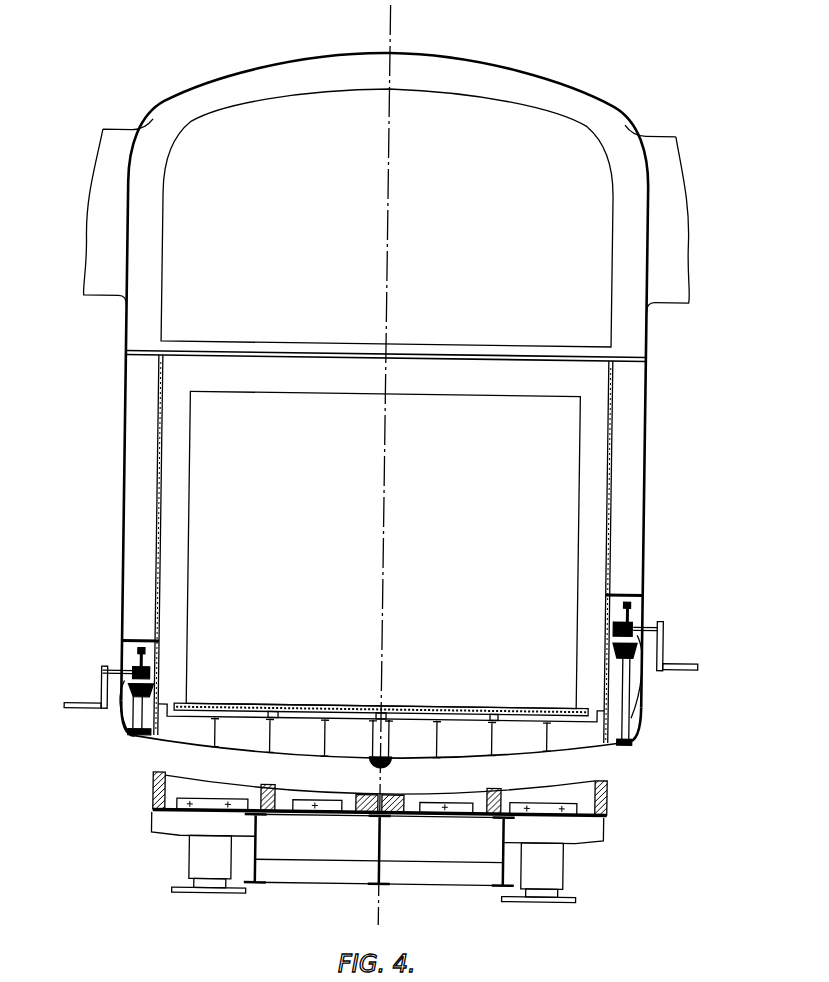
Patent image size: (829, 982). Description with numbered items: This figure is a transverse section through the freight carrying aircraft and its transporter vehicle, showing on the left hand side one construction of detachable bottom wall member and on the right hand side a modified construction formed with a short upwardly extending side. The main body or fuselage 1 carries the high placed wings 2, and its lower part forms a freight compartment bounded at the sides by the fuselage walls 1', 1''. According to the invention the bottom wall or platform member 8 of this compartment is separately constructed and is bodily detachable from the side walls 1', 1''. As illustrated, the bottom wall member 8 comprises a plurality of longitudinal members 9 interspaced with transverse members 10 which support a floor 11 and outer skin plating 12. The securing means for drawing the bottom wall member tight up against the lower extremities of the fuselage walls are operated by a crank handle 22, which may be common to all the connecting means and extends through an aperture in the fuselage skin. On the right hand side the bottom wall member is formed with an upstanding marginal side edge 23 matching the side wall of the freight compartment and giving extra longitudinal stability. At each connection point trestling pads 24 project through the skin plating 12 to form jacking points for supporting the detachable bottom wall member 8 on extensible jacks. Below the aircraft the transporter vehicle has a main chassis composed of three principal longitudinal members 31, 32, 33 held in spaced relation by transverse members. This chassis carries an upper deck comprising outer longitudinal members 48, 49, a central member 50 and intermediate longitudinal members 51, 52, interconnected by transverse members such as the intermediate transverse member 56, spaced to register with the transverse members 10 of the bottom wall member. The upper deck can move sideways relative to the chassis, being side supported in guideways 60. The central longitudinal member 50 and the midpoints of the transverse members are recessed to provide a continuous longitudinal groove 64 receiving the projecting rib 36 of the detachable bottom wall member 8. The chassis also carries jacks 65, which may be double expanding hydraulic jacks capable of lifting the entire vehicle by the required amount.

The fuselage 1 is at (385, 364).
The wings 2 is at (121, 144).
The fuselage side wall 1' is at (652, 552).
The fuselage side wall 1'' is at (121, 544).
The bottom wall member 8 is at (471, 708).
The longitudinal members 9 is at (276, 752).
The transverse members 10 is at (295, 733).
The floor 11 is at (398, 712).
The outer skin plating 12 is at (182, 748).
The crank handle 22 is at (110, 683).
The upstanding marginal side edge 23 is at (655, 688).
The trestling pads 24 is at (143, 739).
The principal longitudinal member 31 is at (255, 858).
The principal longitudinal member 32 is at (391, 850).
The principal longitudinal member 33 is at (511, 827).
The projecting rib 36 is at (396, 763).
The outer longitudinal member 48 is at (162, 799).
The outer longitudinal member 49 is at (618, 800).
The central longitudinal member 50 is at (351, 793).
The intermediate longitudinal member 51 is at (283, 790).
The intermediate longitudinal member 52 is at (505, 791).
The intermediate transverse member 56 is at (572, 799).
The guideways 60 is at (221, 805).
The longitudinal groove 64 is at (386, 795).
The jacks 65 is at (208, 861).